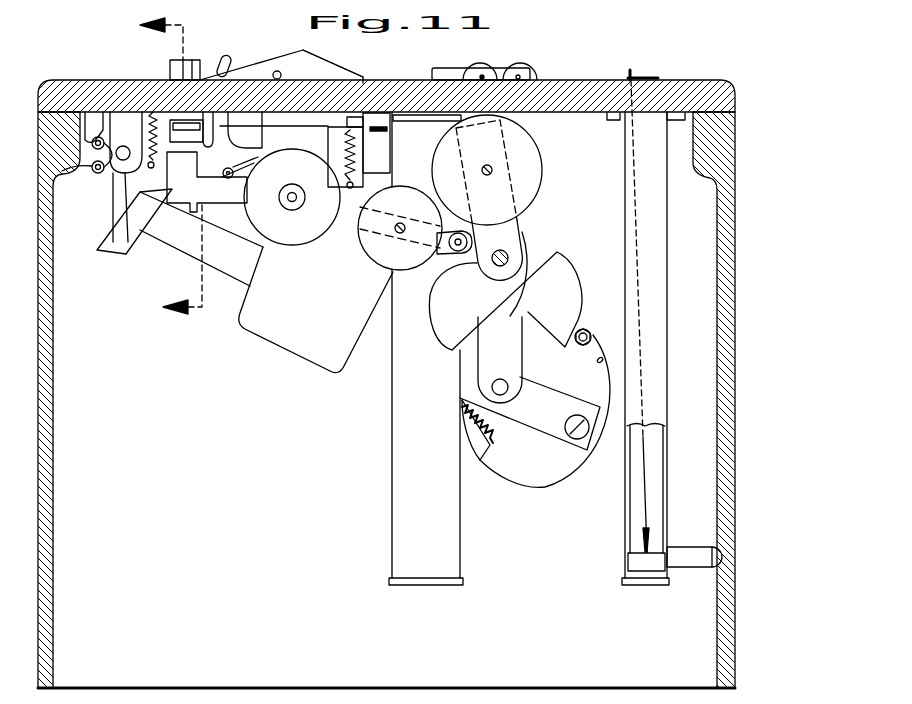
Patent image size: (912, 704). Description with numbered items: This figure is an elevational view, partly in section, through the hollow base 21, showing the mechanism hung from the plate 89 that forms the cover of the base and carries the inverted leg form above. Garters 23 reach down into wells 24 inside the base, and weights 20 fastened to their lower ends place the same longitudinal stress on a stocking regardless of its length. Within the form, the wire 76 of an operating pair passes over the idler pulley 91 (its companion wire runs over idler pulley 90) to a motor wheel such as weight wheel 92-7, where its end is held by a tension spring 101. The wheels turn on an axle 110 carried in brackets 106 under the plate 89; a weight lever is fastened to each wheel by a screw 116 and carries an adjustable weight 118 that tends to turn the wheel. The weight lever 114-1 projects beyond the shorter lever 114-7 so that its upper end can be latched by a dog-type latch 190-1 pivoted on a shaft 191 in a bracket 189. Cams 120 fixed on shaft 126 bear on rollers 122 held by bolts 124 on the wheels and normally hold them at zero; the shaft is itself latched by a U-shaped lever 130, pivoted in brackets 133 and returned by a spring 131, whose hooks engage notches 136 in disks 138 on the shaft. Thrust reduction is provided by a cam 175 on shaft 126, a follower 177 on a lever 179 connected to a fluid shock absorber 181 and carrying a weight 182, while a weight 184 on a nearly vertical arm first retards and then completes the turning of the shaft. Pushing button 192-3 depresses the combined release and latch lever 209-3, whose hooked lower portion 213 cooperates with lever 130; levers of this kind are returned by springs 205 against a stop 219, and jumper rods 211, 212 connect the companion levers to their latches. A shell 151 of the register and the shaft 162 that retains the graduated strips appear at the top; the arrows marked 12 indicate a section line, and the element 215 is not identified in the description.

The section line 12- 12 is at (154, 167).
The weight 20 is at (650, 557).
The hollow base 21 is at (733, 613).
The garter 23 is at (648, 77).
The well 24 is at (457, 567).
The wire 76 is at (520, 470).
The plate 89 is at (720, 82).
The idler pulley 90 is at (484, 70).
The idler pulley 91 is at (533, 67).
The weight wheel 92-7 is at (567, 468).
The tension spring 101 is at (483, 443).
The bracket 106 is at (542, 138).
The axle 110 is at (490, 390).
The weight lever 114-1 is at (150, 283).
The weight lever 114-7 is at (231, 270).
The screw 116 is at (583, 428).
The weight 118 is at (253, 327).
The cam 120 is at (573, 284).
The roller 122 is at (597, 335).
The bolt 124 is at (591, 341).
The shaft 126 is at (508, 257).
The U-shaped lever 130 is at (407, 184).
The spring 131 is at (368, 147).
The bracket 133 is at (380, 147).
The notch 136 is at (513, 228).
The disk 138 is at (543, 237).
The shell 151 is at (252, 68).
The shaft 162 is at (303, 54).
The cam 175 is at (443, 332).
The cam follower 177 is at (445, 252).
The lever 179 is at (347, 218).
The shock absorber 181 is at (304, 152).
The weight 182 is at (375, 247).
The weight 184 is at (541, 175).
The bracket 189 is at (112, 125).
The latch 190-1 is at (113, 228).
The shaft 191 is at (122, 162).
The push button 192-3 is at (170, 58).
The spring 205 is at (145, 140).
The release and latch lever 209-3 is at (147, 228).
The jumper rod 211 is at (91, 143).
The jumper rod 212 is at (91, 166).
The hook portion 213 is at (187, 249).
The pawl 215 is at (220, 56).
The stop 219 is at (158, 113).